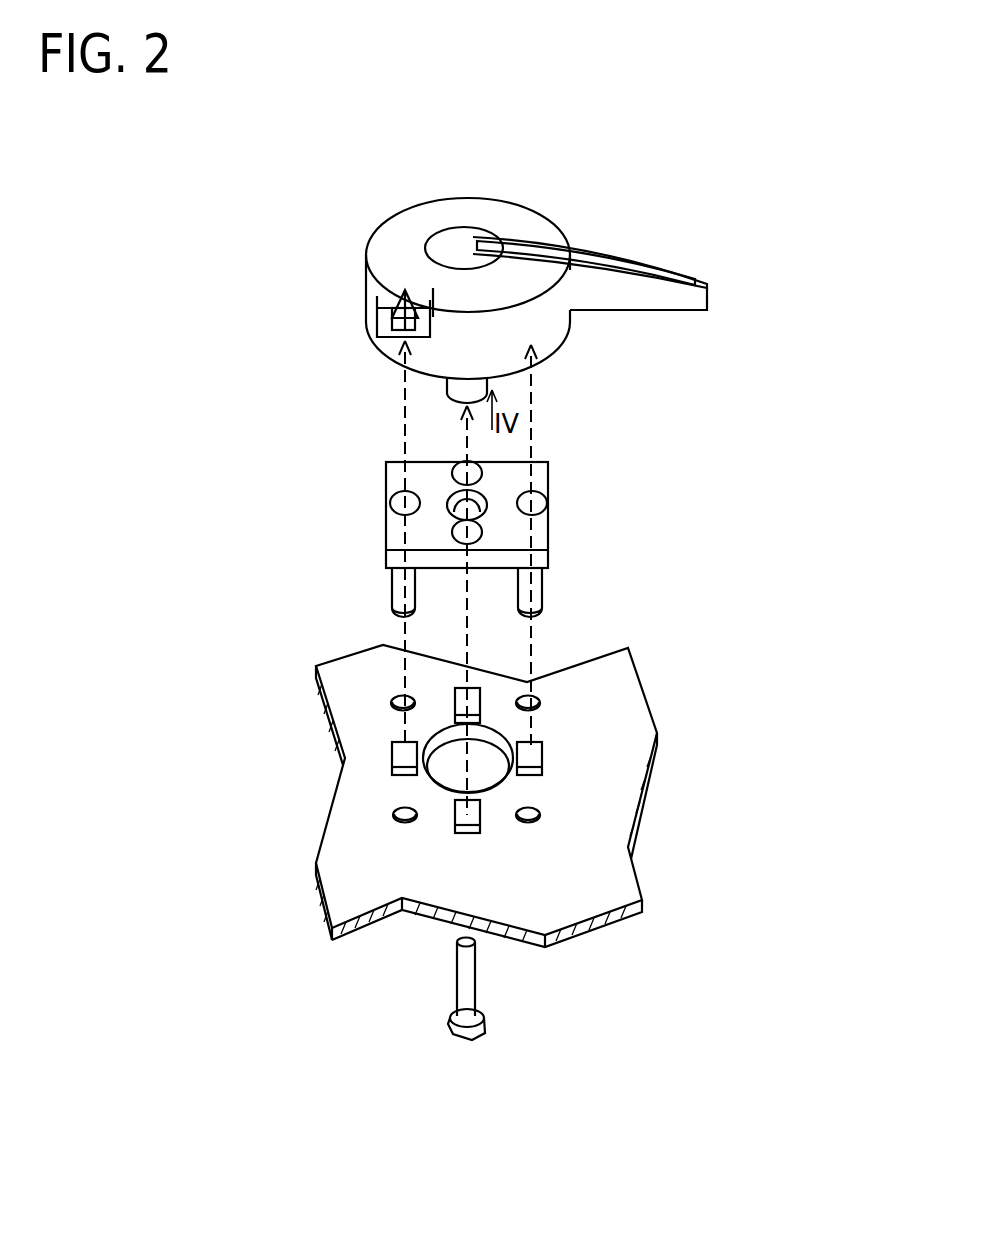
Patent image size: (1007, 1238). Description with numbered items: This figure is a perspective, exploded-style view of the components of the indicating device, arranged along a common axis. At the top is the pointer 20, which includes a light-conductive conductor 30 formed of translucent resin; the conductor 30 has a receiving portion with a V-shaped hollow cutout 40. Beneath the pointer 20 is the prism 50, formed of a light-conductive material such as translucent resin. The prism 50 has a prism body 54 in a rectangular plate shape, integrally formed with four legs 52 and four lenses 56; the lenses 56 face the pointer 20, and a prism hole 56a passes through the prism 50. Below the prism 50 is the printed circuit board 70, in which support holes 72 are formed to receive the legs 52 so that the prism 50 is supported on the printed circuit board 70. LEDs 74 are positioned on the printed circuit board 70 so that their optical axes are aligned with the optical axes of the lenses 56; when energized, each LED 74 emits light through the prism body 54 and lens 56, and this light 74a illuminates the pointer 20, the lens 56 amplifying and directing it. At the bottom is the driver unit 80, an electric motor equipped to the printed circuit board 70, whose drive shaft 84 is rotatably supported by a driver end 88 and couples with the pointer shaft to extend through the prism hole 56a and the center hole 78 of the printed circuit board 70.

The pointer 20 is at (569, 188).
The conductor 30 is at (580, 250).
The cutout 40 is at (393, 300).
The prism 50 is at (508, 526).
The legs 52 is at (392, 586).
The prism body 54 is at (530, 462).
The lenses 56 is at (433, 470).
The prism hole 56a is at (487, 498).
The printed circuit board 70 is at (526, 813).
The support holes 72 is at (393, 702).
The LEDs 74 is at (482, 703).
The light 74a is at (405, 398).
The center hole 78 is at (515, 740).
The driver unit 80 is at (543, 1003).
The drive shaft 84 is at (485, 1018).
The driver end 88 is at (477, 956).